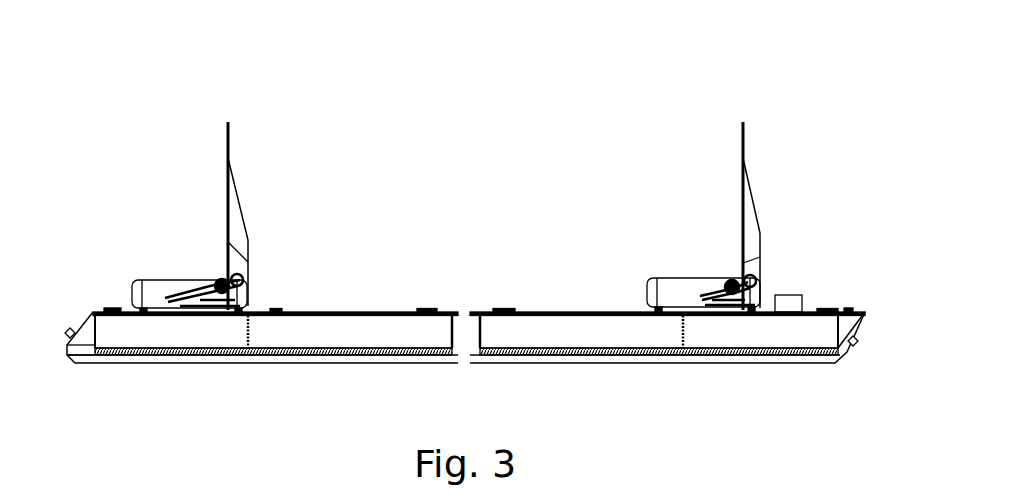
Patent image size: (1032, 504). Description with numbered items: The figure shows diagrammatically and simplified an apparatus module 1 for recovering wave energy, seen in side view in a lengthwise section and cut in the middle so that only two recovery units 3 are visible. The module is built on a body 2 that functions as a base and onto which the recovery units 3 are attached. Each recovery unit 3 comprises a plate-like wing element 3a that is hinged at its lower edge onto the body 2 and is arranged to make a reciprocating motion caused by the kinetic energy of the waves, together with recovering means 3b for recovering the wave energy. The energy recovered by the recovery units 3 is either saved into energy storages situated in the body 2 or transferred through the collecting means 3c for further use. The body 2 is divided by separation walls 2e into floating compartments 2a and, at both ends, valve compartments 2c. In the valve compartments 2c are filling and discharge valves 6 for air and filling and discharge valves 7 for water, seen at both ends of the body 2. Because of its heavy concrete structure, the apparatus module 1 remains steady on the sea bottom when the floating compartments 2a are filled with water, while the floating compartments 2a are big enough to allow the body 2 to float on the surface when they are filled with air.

The apparatus module 1 is at (641, 97).
The body 2 is at (405, 310).
The floating compartments 2a is at (158, 347).
The valve compartments 2c is at (86, 350).
The separation walls 2e is at (252, 336).
The recovery units 3 is at (270, 182).
The wing element 3a is at (228, 193).
The recovering means 3b is at (670, 282).
The collecting means 3c is at (790, 296).
The filling and discharge valves for air 6 is at (106, 309).
The filling and discharge valves for water 7 is at (70, 328).